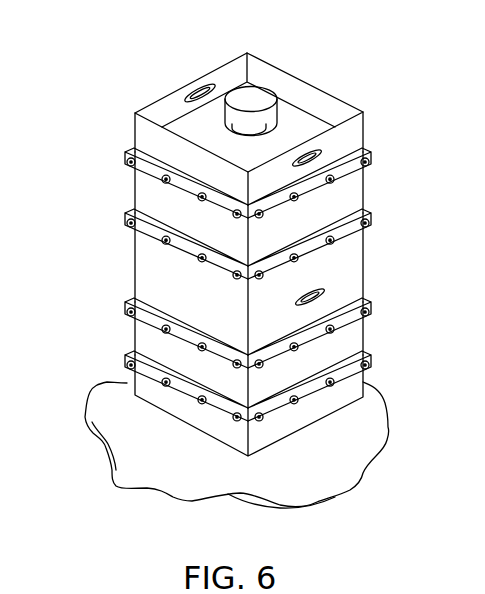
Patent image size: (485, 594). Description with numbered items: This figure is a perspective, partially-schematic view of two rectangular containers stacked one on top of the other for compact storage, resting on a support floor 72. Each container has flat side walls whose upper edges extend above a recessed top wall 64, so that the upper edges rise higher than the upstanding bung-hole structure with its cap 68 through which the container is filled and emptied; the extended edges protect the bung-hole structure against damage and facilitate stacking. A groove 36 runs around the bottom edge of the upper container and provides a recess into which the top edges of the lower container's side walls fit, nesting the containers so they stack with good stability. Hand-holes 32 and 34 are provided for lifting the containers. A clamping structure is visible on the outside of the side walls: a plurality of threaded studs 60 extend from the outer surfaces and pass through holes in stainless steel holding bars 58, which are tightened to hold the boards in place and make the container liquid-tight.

The hand-hole 32 is at (212, 86).
The cap 68 is at (253, 103).
The top wall 64 is at (290, 118).
The hand-hole 34 is at (325, 150).
The threaded stud 60 is at (343, 182).
The groove 36 is at (142, 262).
The holding bar 58 is at (354, 344).
The support floor 72 is at (392, 388).